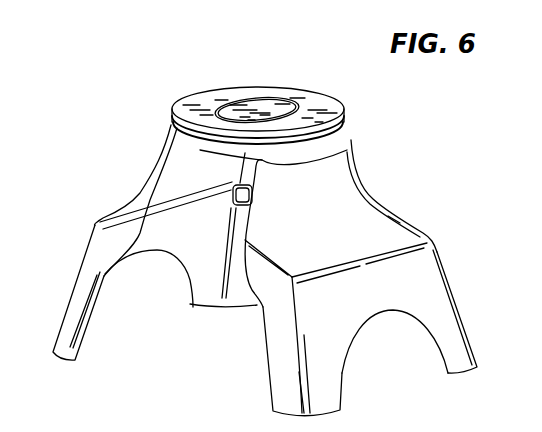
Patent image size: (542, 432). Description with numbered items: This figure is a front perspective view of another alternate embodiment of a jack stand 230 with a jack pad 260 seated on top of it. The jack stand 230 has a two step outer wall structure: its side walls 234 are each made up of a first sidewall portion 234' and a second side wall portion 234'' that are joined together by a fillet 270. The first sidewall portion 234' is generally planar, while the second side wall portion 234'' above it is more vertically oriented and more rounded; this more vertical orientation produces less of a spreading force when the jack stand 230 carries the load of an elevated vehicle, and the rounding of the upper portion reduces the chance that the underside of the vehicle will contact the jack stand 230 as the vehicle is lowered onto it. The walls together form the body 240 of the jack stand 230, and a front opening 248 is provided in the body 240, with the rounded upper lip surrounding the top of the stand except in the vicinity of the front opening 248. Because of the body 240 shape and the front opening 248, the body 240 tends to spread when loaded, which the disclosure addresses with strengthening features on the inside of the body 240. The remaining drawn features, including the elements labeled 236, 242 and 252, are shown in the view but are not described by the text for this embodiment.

The jack stand 230 is at (402, 268).
The side walls 234 is at (452, 298).
The first sidewall portion 234' is at (472, 307).
The second side wall portion 234'' is at (373, 174).
The leg 236 is at (98, 253).
The body 240 is at (147, 113).
The rib 242 is at (212, 253).
The front opening 248 is at (177, 188).
The arch opening 252 is at (383, 367).
The jack pad 260 is at (278, 77).
The fillet 270 is at (370, 227).